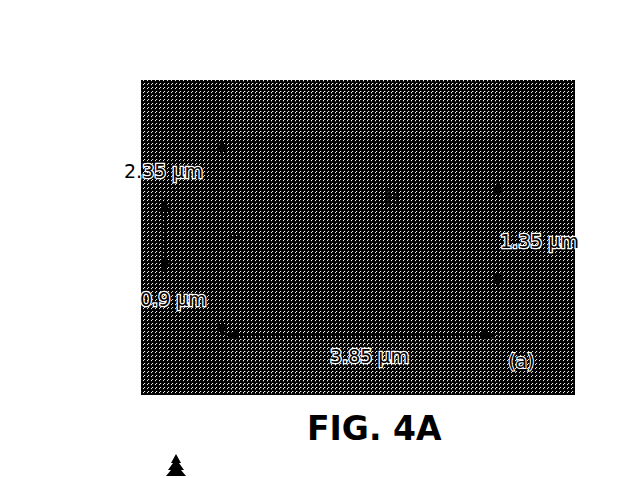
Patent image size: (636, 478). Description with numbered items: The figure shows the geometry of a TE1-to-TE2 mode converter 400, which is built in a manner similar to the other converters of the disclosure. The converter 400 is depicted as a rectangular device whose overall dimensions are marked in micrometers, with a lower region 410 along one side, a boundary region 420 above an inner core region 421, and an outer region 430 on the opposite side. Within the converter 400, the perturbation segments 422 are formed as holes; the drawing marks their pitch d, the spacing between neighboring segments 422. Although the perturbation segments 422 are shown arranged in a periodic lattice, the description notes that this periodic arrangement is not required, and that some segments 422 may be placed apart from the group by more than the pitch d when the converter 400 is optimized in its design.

The TE1-to-TE2 mode converter 400 is at (590, 48).
The substrate region 410 is at (195, 205).
The upper boundary layer 420 is at (302, 137).
The waveguide core region 421 is at (332, 153).
The perturbation segments 422 is at (397, 186).
The cladding region 430 is at (533, 198).